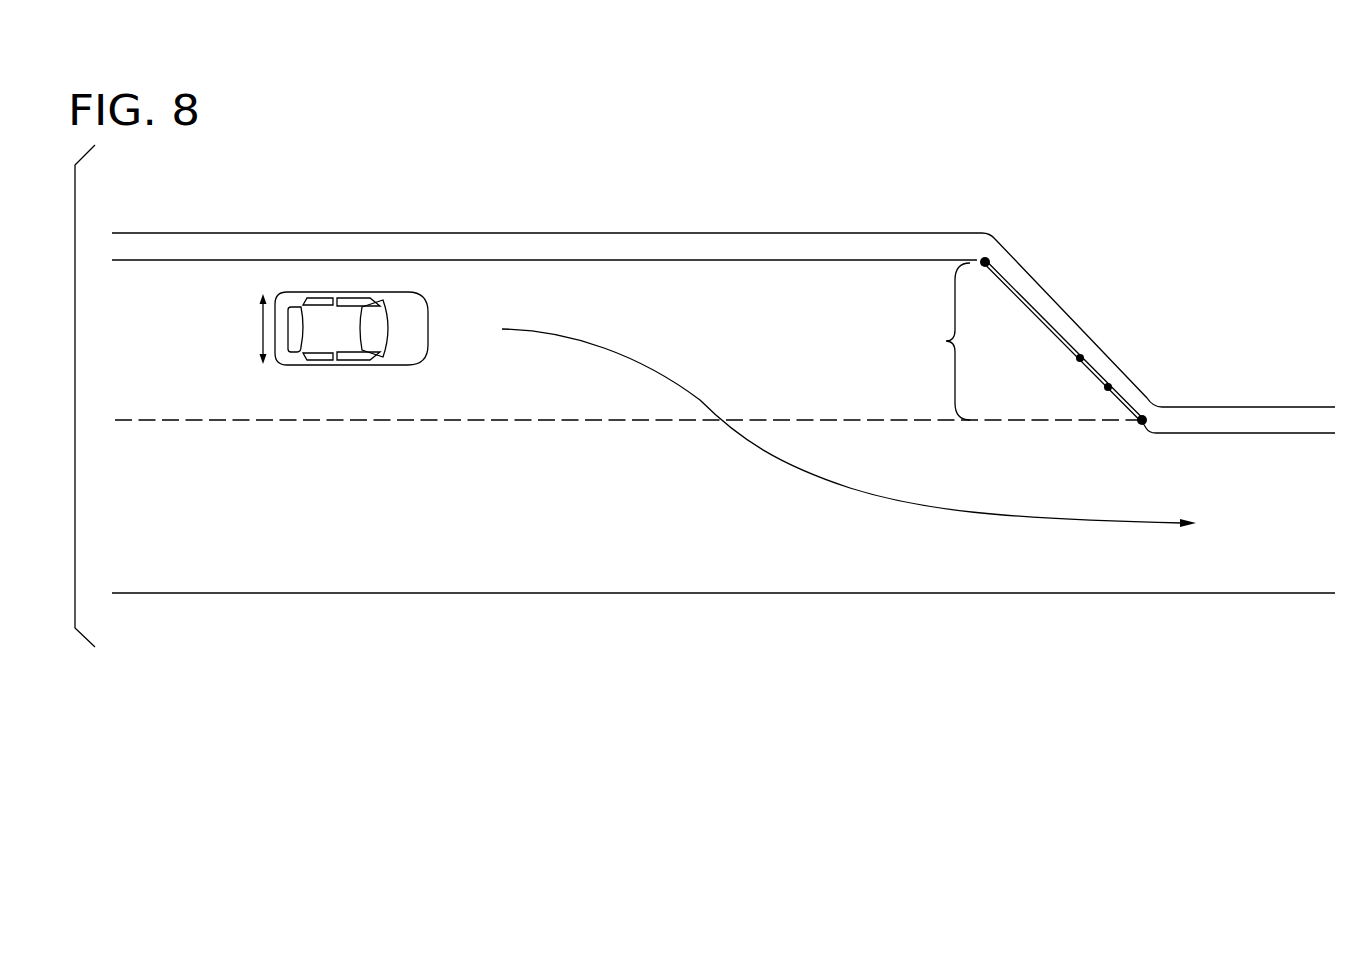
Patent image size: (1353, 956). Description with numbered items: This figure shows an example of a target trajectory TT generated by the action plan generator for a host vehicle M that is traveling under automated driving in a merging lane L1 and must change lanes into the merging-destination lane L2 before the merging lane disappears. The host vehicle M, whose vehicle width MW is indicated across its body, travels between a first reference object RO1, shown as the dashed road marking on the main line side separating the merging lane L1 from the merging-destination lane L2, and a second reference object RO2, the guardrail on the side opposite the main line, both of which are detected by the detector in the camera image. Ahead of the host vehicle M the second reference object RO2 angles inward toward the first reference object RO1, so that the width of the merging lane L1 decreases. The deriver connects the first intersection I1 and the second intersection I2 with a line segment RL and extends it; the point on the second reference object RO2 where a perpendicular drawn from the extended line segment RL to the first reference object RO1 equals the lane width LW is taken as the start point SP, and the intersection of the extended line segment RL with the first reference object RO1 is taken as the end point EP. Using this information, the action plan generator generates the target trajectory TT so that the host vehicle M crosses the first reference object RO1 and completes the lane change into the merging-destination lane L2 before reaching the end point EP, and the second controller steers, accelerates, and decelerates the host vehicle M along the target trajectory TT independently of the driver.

The second reference object RO2 is at (571, 231).
The first reference object RO1 is at (375, 423).
The merging lane L1 is at (142, 350).
The merging-destination lane L2 is at (142, 522).
The host vehicle M is at (430, 330).
The vehicle width MW is at (258, 328).
The target trajectory TT is at (810, 472).
The line segment RL is at (1032, 307).
The start point SP is at (990, 258).
The first intersection I1 is at (1083, 355).
The second intersection I2 is at (1111, 384).
The end point EP is at (1148, 402).
The lane width LW is at (939, 341).